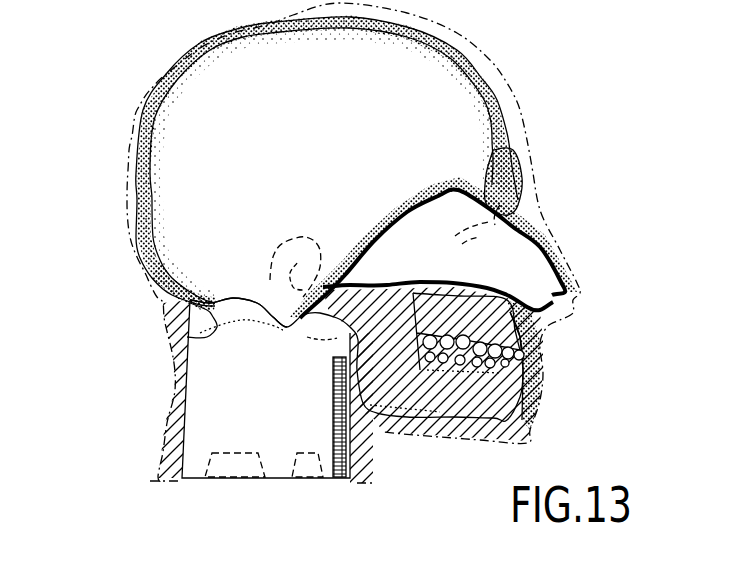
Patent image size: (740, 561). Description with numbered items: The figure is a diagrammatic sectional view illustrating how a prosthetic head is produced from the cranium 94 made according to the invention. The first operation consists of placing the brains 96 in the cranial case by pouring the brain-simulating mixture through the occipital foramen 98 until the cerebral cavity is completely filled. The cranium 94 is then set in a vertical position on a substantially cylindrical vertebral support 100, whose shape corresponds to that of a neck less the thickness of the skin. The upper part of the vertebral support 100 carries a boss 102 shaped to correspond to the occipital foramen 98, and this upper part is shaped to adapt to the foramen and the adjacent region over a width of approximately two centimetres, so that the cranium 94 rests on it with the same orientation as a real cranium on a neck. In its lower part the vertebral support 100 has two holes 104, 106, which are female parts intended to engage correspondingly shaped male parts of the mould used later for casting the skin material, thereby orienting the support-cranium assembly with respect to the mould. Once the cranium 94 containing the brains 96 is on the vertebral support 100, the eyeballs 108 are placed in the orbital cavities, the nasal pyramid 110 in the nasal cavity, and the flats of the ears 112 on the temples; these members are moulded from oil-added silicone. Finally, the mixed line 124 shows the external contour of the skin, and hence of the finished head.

The cranium 94 is at (138, 259).
The brains 96 is at (198, 67).
The occipital foramen 98 is at (190, 338).
The vertebral support 100 is at (198, 447).
The boss 102 is at (247, 297).
The hole 104 is at (218, 481).
The hole 106 is at (310, 472).
The eyeballs 108 is at (528, 185).
The nasal pyramid 110 is at (523, 252).
The flats of the ears 112 is at (300, 238).
The mixed line 124 is at (537, 80).